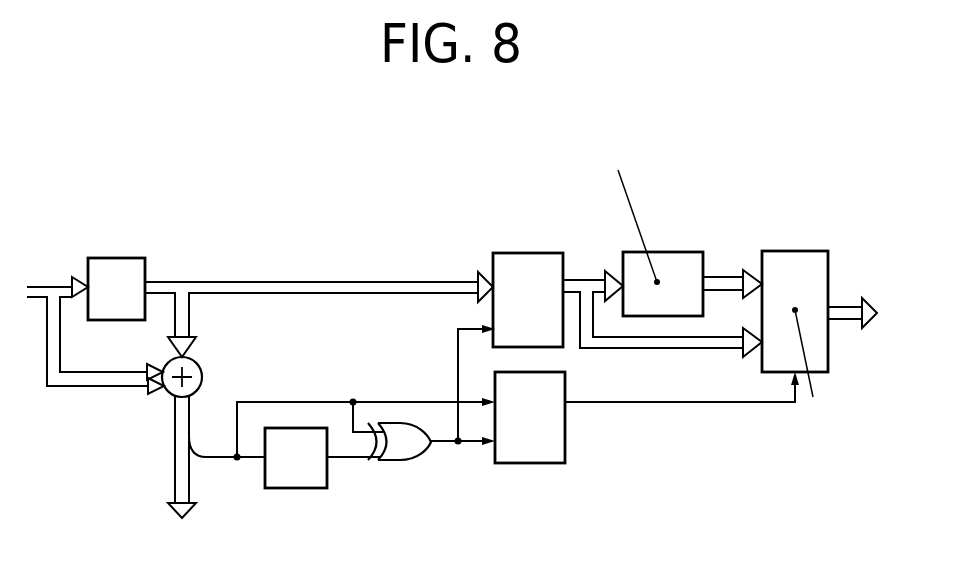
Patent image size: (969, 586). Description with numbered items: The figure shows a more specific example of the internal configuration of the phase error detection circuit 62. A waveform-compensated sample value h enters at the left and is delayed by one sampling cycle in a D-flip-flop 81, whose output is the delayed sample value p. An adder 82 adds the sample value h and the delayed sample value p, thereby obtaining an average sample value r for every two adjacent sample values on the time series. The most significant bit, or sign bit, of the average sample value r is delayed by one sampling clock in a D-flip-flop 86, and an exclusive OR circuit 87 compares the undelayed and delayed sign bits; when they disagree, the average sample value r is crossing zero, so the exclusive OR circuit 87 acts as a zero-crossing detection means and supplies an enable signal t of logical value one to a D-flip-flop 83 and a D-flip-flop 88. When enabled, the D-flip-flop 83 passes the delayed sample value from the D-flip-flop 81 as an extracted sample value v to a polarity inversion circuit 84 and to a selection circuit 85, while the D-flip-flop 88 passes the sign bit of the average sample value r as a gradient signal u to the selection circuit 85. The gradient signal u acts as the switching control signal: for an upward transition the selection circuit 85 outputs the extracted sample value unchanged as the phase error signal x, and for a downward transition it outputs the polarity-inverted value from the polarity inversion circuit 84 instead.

The phase error detection circuit 62 is at (405, 183).
The D-flip-flop 81 is at (128, 258).
The adder 82 is at (196, 363).
The D-flip-flop 83 is at (541, 253).
The polarity inversion circuit 84 is at (683, 252).
The selection circuit 85 is at (810, 251).
The D-flip-flop 86 is at (288, 488).
The exclusive OR circuit 87 is at (404, 460).
The D-flip-flop 88 is at (522, 463).